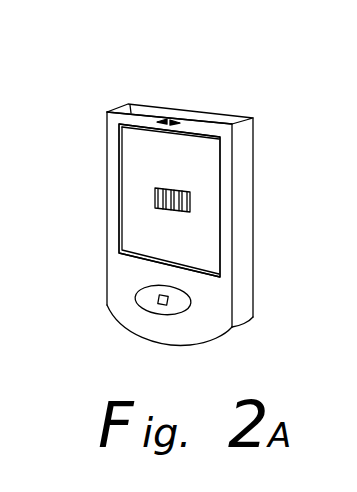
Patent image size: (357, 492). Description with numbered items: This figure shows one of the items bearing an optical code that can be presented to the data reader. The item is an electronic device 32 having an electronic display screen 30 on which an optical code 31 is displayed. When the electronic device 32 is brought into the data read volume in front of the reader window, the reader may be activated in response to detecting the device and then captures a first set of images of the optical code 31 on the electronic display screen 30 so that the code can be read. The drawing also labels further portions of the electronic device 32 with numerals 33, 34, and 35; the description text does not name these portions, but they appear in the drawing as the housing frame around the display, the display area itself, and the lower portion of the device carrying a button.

The electronic display screen 30 is at (194, 218).
The optical code 31 is at (165, 187).
The electronic device 32 is at (163, 98).
The housing 33 is at (112, 148).
The display screen 34 is at (197, 138).
The operation button portion 35 is at (107, 267).